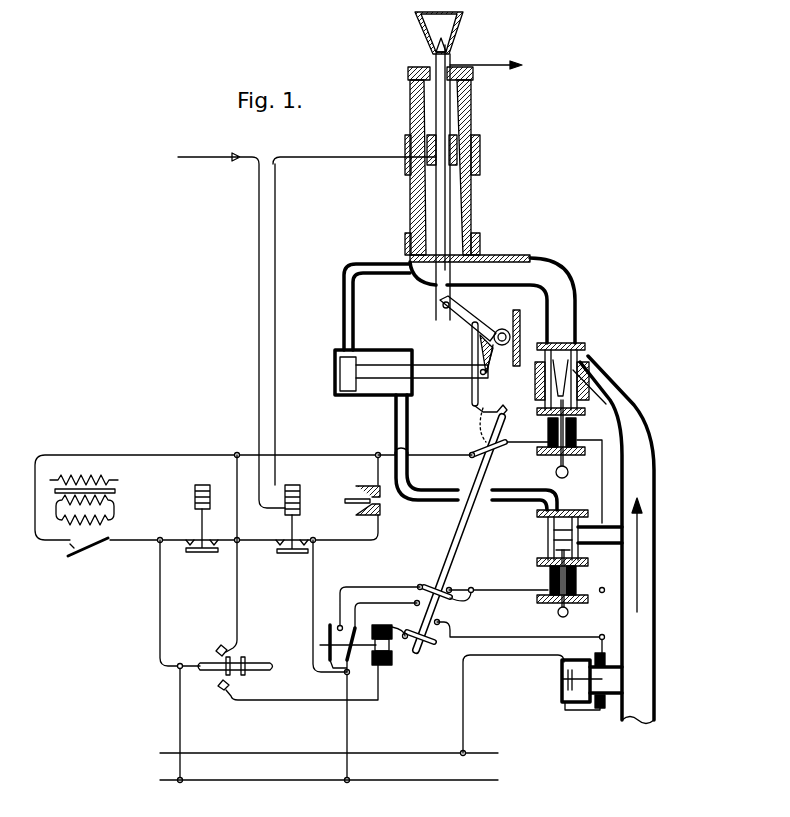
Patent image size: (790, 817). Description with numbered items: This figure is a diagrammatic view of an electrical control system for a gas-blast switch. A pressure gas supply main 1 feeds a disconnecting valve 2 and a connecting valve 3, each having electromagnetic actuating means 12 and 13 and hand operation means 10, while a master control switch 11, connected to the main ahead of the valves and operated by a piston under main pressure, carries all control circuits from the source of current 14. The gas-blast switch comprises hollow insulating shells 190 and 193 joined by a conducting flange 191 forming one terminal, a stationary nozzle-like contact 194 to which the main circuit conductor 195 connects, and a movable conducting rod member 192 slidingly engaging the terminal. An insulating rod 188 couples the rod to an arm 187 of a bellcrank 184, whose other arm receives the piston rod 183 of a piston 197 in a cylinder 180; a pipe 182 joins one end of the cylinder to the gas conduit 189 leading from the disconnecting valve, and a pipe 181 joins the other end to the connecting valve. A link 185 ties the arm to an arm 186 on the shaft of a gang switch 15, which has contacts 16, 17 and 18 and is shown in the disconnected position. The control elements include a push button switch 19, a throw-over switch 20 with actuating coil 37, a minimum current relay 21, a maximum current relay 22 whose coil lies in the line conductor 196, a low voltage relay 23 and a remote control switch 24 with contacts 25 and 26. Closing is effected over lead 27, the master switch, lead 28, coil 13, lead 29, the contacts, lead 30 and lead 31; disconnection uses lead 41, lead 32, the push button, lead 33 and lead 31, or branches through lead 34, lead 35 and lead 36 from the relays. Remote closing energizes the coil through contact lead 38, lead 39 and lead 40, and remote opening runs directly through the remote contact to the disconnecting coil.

The pressure gas supply main 1 is at (655, 600).
The disconnecting valve 2 is at (537, 378).
The connecting valve 3 is at (548, 530).
The hand operation means 10 is at (558, 613).
The master control switch 11 is at (560, 681).
The electromagnetic actuating means 12 is at (548, 432).
The electromagnetic actuating means 13 is at (550, 578).
The source of current 14 is at (163, 780).
The gang switch 15 is at (488, 479).
The contacts 16 is at (478, 448).
The contacts 17 is at (430, 584).
The contacts 18 is at (426, 641).
The push button switch 19 is at (366, 486).
The throw-over switch 20 is at (327, 652).
The minimum current relay 21 is at (196, 496).
The maximum current relay 22 is at (293, 485).
The low voltage relay 23 is at (118, 491).
The remote control switch 24 is at (252, 660).
The contact 25 is at (220, 646).
The contact 26 is at (222, 689).
The lead 27 is at (499, 656).
The lead 28 is at (602, 491).
The lead 29 is at (483, 586).
The lead 30 is at (361, 603).
The lead 31 is at (345, 720).
The lead 32 is at (427, 465).
The lead 33 is at (313, 600).
The lead 34 is at (242, 553).
The lead 35 is at (179, 708).
The lead 36 is at (121, 455).
The actuating coil 37 is at (388, 665).
The contact lead 38 is at (283, 698).
The lead 39 is at (392, 626).
The lead 40 is at (476, 632).
The lead 41 is at (553, 481).
The cylinder 180 is at (378, 396).
The pipe 181 is at (410, 415).
The pipe 182 is at (370, 262).
The piston rod 183 is at (432, 370).
The bellcrank 184 is at (503, 328).
The link 185 is at (472, 398).
The arm 186 is at (495, 408).
The arm 187 is at (472, 318).
The insulating rod 188 is at (450, 206).
The gas conduit 189 is at (547, 262).
The hollow insulating shell 190 is at (410, 202).
The conducting flange 191 is at (453, 140).
The conducting rod member 192 is at (440, 104).
The hollow insulating shell 193 is at (471, 97).
The nozzle-like contact 194 is at (445, 58).
The main circuit conductor 195 is at (501, 67).
The line conductor 196 is at (275, 329).
The piston 197 is at (352, 362).